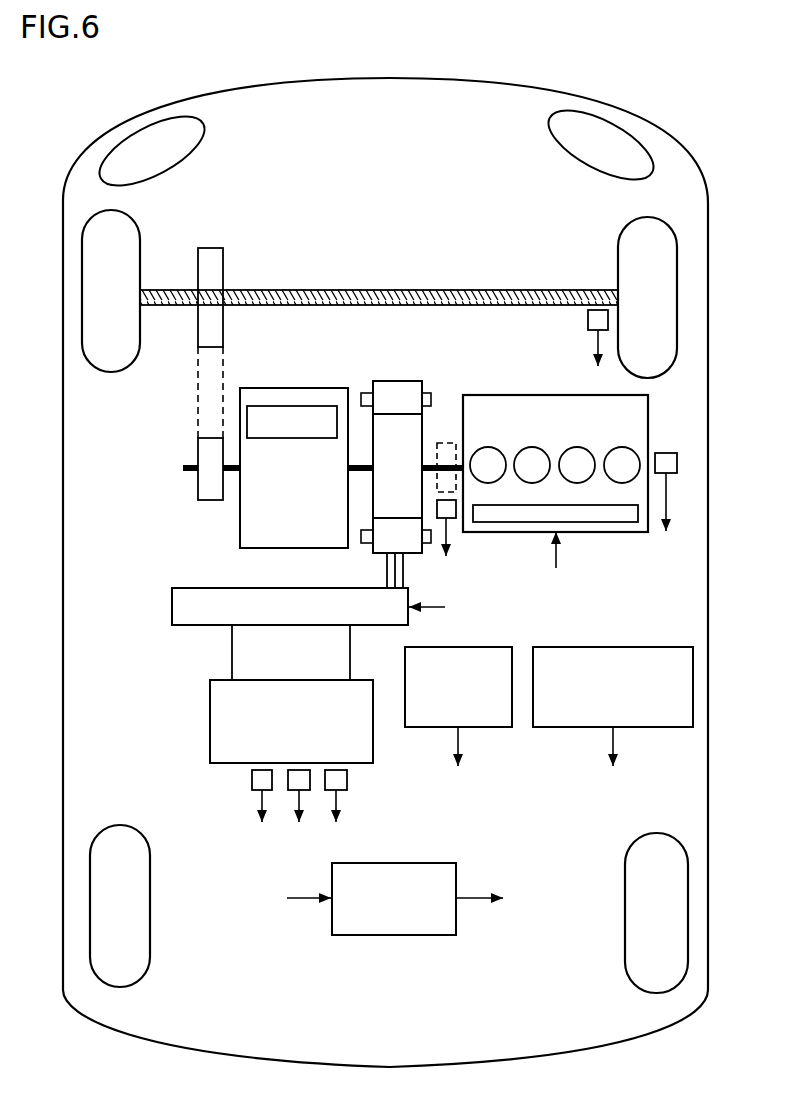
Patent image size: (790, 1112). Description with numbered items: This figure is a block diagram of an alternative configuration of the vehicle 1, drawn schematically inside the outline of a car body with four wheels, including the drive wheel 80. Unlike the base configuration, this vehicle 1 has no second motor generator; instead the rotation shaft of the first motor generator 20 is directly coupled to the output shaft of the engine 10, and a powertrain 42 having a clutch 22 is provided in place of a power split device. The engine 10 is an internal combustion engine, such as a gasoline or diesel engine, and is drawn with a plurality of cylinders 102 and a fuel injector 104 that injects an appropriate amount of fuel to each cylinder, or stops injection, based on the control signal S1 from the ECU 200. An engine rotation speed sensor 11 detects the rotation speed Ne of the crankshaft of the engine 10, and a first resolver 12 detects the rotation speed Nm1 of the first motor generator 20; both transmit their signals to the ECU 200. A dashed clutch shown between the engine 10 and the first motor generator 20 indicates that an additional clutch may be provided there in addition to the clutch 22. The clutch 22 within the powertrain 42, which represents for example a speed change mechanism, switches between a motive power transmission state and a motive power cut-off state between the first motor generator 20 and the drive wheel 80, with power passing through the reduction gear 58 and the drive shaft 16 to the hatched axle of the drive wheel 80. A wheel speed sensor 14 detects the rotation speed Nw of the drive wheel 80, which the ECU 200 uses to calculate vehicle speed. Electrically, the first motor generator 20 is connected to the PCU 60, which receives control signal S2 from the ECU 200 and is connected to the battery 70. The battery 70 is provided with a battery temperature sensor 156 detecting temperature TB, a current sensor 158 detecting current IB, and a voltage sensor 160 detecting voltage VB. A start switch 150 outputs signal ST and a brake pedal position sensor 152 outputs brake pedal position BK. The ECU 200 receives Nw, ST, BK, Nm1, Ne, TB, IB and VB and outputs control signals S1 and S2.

The vehicle 1 is at (352, 52).
The engine 10 is at (555, 471).
The engine rotation speed sensor 11 is at (665, 453).
The first resolver 12 is at (450, 520).
The wheel speed sensor 14 is at (588, 320).
The drive shaft 16 is at (188, 472).
The first motor generator 20 is at (397, 381).
The clutch 22 is at (270, 406).
The powertrain 42 is at (320, 388).
The reduction gear 58 is at (210, 248).
The PCU 60 is at (172, 607).
The battery 70 is at (210, 720).
The drive wheel 80 is at (630, 222).
The cylinders 102 is at (577, 447).
The fuel injector 104 is at (601, 522).
The start switch 150 is at (462, 647).
The brake pedal position sensor 152 is at (642, 647).
The battery temperature sensor 156 is at (252, 780).
The current sensor 158 is at (300, 770).
The voltage sensor 160 is at (347, 780).
The ECU 200 is at (422, 863).